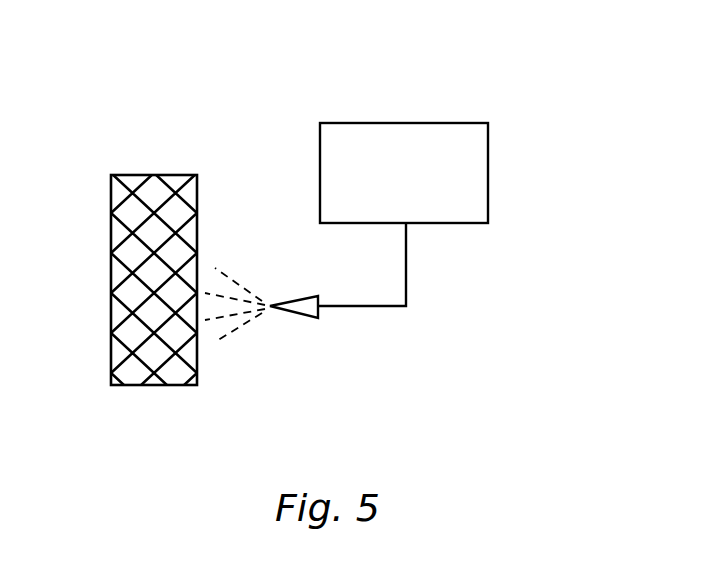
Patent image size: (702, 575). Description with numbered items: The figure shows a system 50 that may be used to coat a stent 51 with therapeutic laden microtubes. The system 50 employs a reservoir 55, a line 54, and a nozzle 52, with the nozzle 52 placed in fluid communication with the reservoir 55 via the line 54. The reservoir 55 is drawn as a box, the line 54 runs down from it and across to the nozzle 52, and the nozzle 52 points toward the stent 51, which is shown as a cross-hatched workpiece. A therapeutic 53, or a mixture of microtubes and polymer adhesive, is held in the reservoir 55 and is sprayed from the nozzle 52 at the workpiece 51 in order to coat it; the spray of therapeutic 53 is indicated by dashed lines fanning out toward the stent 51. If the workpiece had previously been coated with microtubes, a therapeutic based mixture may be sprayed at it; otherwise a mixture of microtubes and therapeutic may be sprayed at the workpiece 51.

The system 50 is at (380, 85).
The stent 51 is at (110, 265).
The nozzle 52 is at (295, 316).
The therapeutic 53 is at (227, 328).
The line 54 is at (406, 262).
The reservoir 55 is at (488, 182).